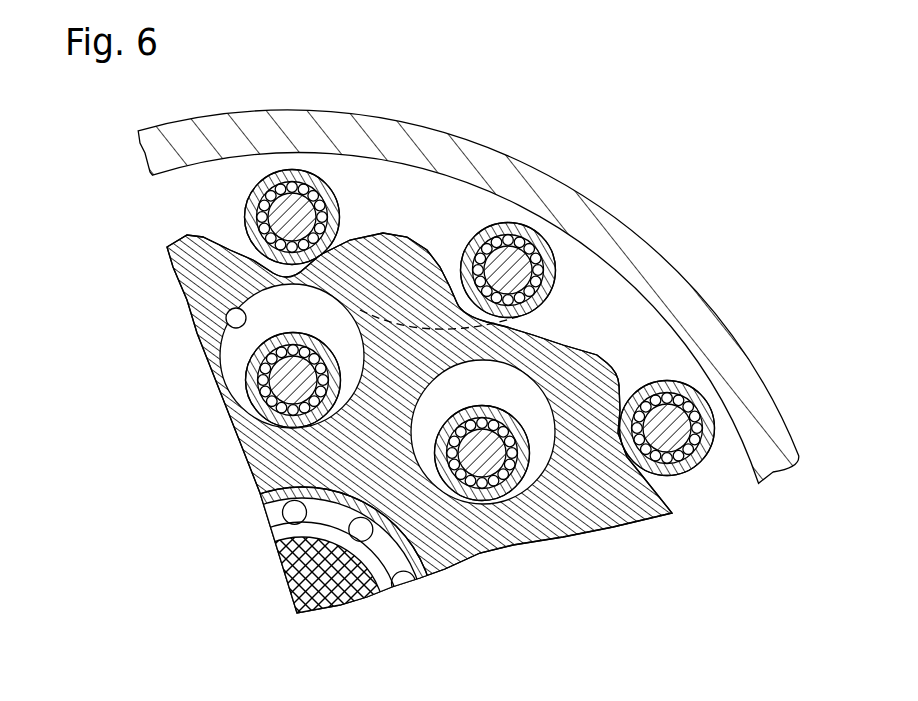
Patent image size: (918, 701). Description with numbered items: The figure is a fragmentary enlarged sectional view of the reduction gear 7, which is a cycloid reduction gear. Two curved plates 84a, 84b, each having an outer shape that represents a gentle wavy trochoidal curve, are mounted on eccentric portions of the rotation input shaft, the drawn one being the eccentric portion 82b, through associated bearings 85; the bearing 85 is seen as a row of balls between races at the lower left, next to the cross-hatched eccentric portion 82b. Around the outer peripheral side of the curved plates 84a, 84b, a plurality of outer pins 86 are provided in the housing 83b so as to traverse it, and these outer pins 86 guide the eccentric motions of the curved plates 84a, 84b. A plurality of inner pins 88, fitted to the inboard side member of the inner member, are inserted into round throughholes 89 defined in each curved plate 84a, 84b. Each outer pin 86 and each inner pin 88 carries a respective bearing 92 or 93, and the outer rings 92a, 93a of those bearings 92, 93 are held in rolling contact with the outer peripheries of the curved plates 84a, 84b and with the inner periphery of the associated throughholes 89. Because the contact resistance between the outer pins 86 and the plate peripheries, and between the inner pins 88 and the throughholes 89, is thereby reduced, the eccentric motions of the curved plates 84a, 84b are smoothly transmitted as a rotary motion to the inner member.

The reduction gear 7 is at (230, 103).
The housing 83b is at (283, 120).
The outer pins 86 is at (428, 178).
The bearings 92 is at (536, 204).
The outer rings 92a is at (546, 262).
The curved plate 84a is at (580, 343).
The curved plate 84b is at (447, 465).
The round throughholes 89 is at (236, 318).
The outer rings 93a is at (256, 360).
The bearings 93 is at (227, 389).
The inner pins 88 is at (374, 453).
The eccentric portion 82b is at (317, 594).
The bearings 85 is at (410, 592).